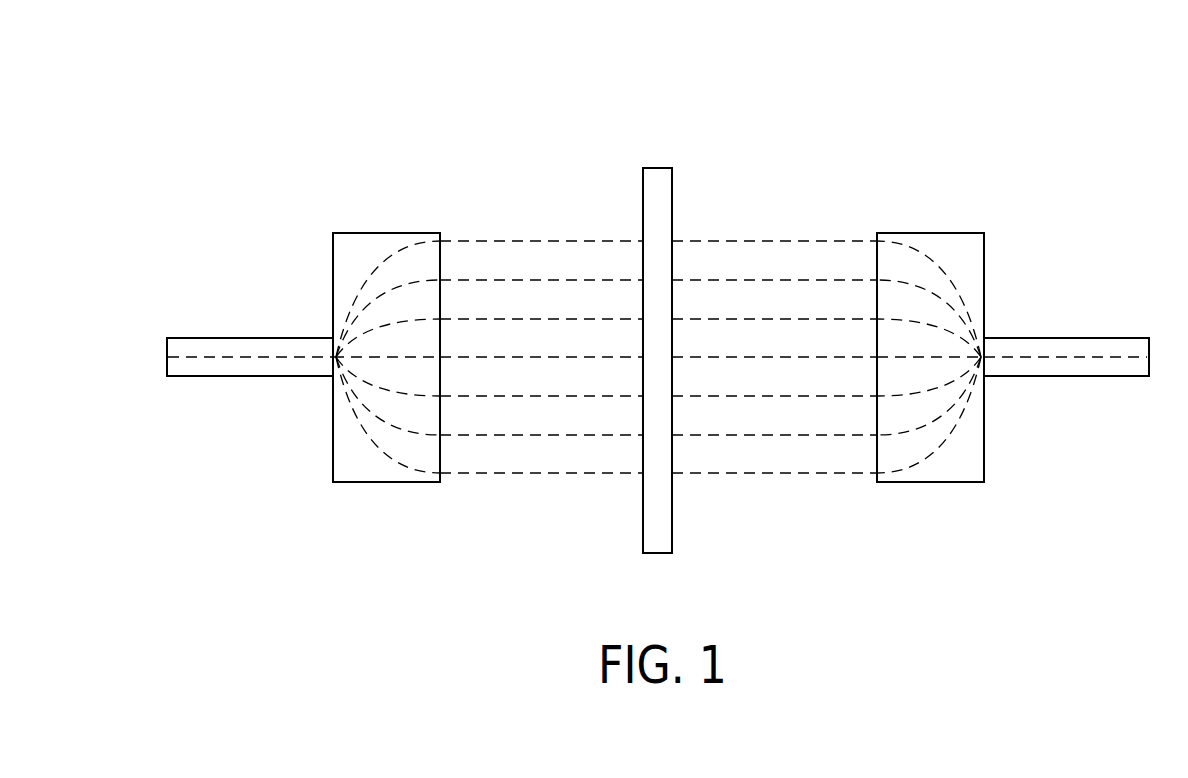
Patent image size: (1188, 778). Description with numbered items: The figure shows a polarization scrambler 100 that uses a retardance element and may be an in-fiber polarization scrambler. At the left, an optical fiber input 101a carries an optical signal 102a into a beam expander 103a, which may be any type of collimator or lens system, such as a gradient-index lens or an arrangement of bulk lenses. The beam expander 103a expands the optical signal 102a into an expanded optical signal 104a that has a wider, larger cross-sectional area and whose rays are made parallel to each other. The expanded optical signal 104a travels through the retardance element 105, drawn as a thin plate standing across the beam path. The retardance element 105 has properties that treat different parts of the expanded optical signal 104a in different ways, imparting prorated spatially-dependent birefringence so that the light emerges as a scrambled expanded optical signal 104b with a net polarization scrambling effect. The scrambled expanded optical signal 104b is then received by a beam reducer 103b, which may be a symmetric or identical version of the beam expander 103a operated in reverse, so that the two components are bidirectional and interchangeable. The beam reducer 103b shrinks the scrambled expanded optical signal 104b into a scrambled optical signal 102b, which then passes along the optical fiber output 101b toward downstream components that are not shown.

The polarization scrambler 100 is at (840, 30).
The optical fiber input 101a is at (203, 337).
The optical fiber output 101b is at (1137, 338).
The optical signal 102a is at (302, 357).
The scrambled optical signal 102b is at (1022, 356).
The beam expander 103a is at (405, 233).
The beam reducer 103b is at (955, 233).
The expanded optical signal 104a is at (568, 241).
The scrambled expanded optical signal 104b is at (782, 241).
The retardance element 105 is at (672, 168).